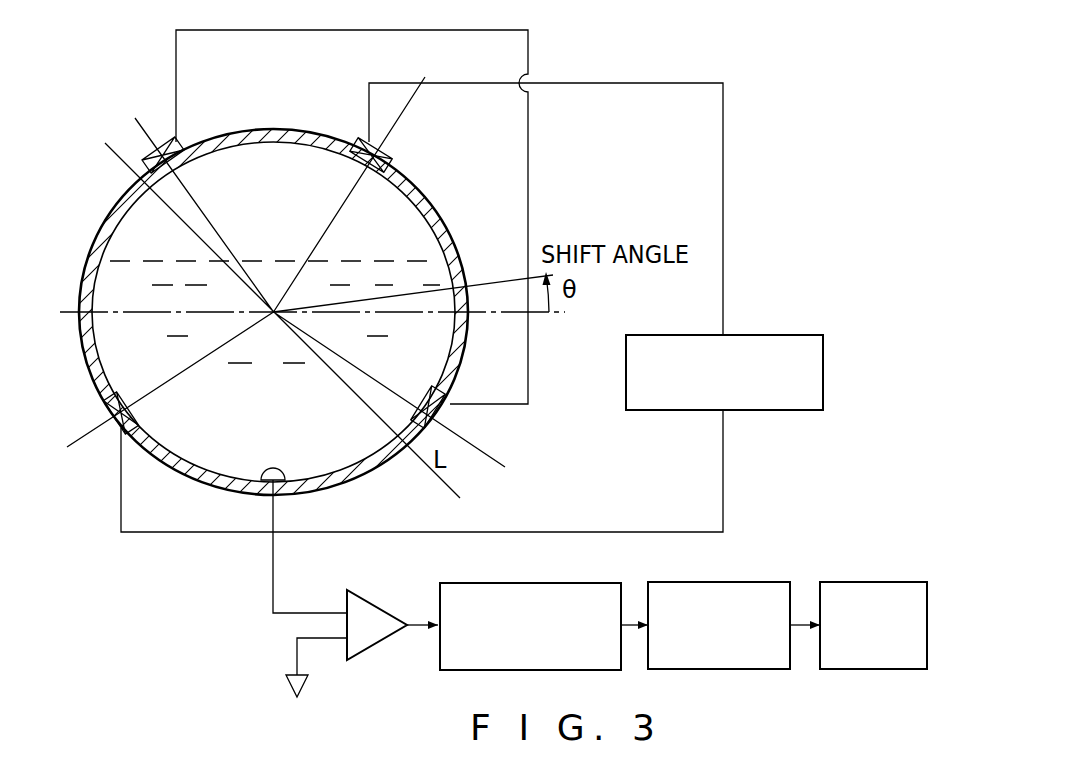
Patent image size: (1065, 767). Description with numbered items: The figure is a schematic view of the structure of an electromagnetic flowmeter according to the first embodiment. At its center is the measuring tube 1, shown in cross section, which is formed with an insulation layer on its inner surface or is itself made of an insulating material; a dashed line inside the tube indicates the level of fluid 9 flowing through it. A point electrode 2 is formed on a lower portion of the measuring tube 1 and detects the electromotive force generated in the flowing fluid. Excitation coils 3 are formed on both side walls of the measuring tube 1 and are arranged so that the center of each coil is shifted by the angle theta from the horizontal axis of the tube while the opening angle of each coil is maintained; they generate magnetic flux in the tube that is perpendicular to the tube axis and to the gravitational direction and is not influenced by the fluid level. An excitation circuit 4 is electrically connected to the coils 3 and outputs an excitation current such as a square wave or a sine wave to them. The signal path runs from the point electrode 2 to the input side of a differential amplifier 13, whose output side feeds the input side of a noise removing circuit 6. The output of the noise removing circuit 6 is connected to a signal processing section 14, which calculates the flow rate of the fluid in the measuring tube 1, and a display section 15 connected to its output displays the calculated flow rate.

The measuring tube 1 is at (228, 131).
The point electrode 2 is at (277, 468).
The excitation coils 3 is at (451, 242).
The excitation circuit 4 is at (736, 335).
The noise removing circuit 6 is at (562, 583).
The level of fluid 9 is at (261, 261).
The differential amplifier 13 is at (374, 626).
The signal processing section 14 is at (741, 582).
The display section 15 is at (869, 582).